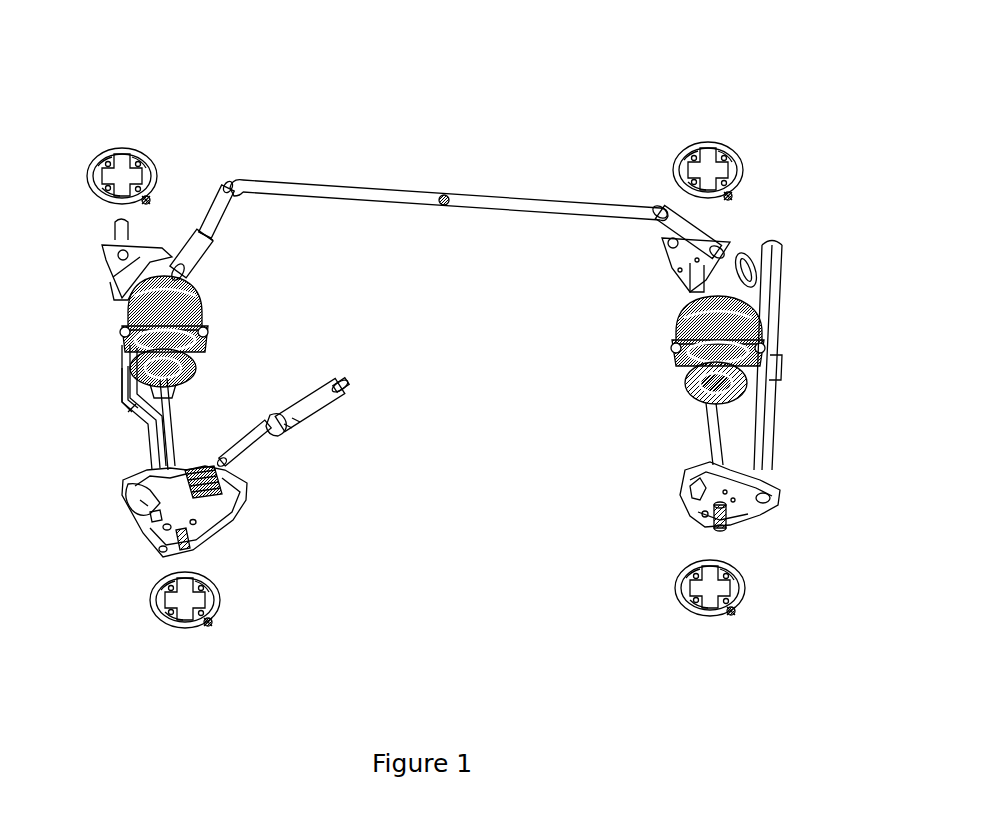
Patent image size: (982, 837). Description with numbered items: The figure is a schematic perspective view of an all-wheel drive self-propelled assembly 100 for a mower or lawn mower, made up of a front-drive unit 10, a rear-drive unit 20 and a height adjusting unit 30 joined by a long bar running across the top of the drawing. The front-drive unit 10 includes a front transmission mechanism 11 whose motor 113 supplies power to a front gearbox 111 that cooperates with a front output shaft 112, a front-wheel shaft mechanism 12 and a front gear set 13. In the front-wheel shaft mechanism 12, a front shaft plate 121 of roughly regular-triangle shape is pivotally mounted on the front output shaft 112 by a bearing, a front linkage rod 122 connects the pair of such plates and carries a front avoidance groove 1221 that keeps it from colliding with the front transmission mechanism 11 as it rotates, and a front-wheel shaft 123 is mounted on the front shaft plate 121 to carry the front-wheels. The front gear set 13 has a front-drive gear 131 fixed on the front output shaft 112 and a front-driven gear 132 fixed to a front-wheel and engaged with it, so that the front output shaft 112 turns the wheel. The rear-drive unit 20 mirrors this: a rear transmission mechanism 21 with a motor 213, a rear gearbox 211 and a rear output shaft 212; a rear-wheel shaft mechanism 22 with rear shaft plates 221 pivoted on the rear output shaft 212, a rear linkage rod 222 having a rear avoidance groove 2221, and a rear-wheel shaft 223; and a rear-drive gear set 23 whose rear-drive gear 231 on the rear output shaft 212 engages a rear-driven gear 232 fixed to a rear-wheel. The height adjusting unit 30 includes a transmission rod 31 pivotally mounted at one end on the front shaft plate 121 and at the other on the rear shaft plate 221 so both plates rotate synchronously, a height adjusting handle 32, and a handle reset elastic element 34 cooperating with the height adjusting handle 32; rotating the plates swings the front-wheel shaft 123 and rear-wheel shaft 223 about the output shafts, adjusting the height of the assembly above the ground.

The all-wheel drive self-propelled assembly 100 is at (478, 48).
The front-drive unit 10 is at (745, 312).
The front transmission mechanism 11 is at (540, 290).
The front gearbox 111 is at (670, 370).
The front output shaft 112 is at (710, 435).
The motor 113 is at (680, 322).
The front-wheel shaft mechanism 12 is at (884, 410).
The front shaft plate 121 is at (735, 490).
The front linkage rod 122 is at (765, 450).
The front avoidance groove 1221 is at (758, 356).
The front-wheel shaft 123 is at (735, 512).
The front gear set 13 is at (832, 560).
The front-drive gear 131 is at (735, 610).
The front-driven gear 132 is at (740, 580).
The rear-drive unit 20 is at (130, 328).
The rear transmission mechanism 21 is at (300, 270).
The rear gearbox 211 is at (200, 324).
The rear output shaft 212 is at (195, 386).
The motor 213 is at (190, 288).
The rear-wheel shaft mechanism 22 is at (50, 420).
The rear shaft plate 221 is at (160, 492).
The rear linkage rod 222 is at (152, 450).
The rear avoidance groove 2221 is at (140, 395).
The rear-wheel shaft 223 is at (128, 490).
The rear-drive gear set 23 is at (310, 572).
The rear-drive gear 231 is at (215, 620).
The rear-driven gear 232 is at (220, 594).
The height adjusting unit 30 is at (397, 190).
The transmission rod 31 is at (497, 208).
The height adjusting handle 32 is at (312, 430).
The handle reset elastic element 34 is at (266, 492).